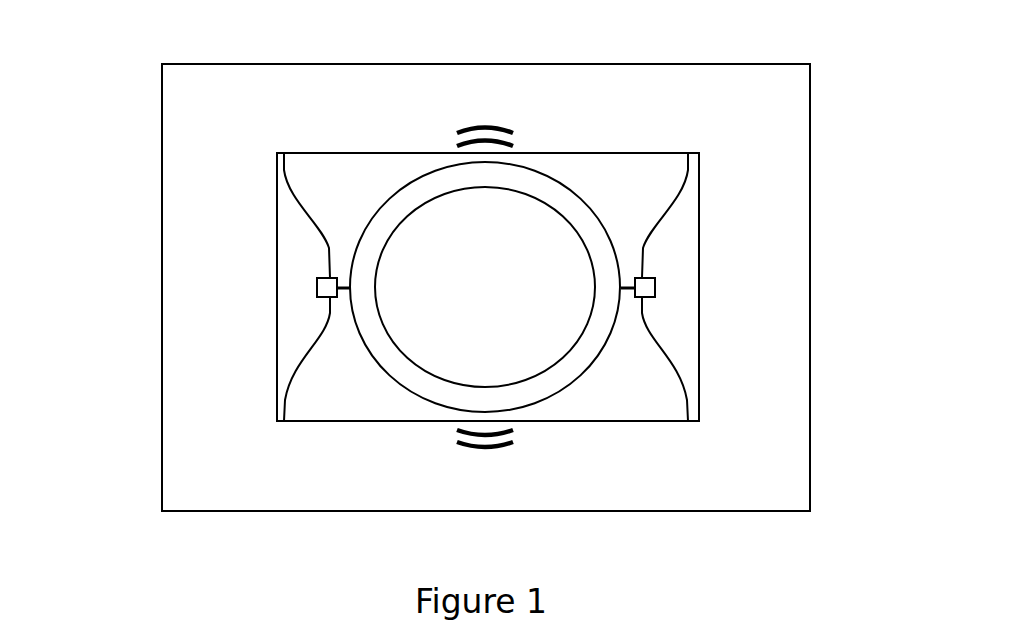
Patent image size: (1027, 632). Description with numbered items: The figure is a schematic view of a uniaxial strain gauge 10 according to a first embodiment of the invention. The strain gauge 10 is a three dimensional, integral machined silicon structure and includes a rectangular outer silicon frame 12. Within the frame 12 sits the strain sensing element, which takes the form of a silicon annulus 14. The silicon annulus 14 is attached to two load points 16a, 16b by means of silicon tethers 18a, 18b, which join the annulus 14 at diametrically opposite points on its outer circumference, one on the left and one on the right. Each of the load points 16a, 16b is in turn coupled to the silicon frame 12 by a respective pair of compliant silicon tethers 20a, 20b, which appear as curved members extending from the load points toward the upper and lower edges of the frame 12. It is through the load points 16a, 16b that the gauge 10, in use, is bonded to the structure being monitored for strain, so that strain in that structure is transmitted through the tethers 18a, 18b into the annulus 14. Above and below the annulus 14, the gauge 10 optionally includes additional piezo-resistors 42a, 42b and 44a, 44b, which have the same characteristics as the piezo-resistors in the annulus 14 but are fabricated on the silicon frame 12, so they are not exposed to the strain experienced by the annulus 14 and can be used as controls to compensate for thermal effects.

The uniaxial strain gauge 10 is at (103, 128).
The rectangular outer silicon frame 12 is at (210, 109).
The silicon annulus 14 is at (393, 238).
The load point 16a is at (317, 280).
The load point 16b is at (655, 283).
The silicon tether 18a is at (336, 297).
The silicon tether 18b is at (636, 297).
The pair of compliant silicon tethers 20a is at (293, 194).
The pair of compliant silicon tethers 20b is at (679, 194).
The piezo-resistor 42a is at (480, 128).
The piezo-resistor 42b is at (509, 143).
The piezo-resistor 44a is at (478, 449).
The piezo-resistor 44b is at (513, 430).